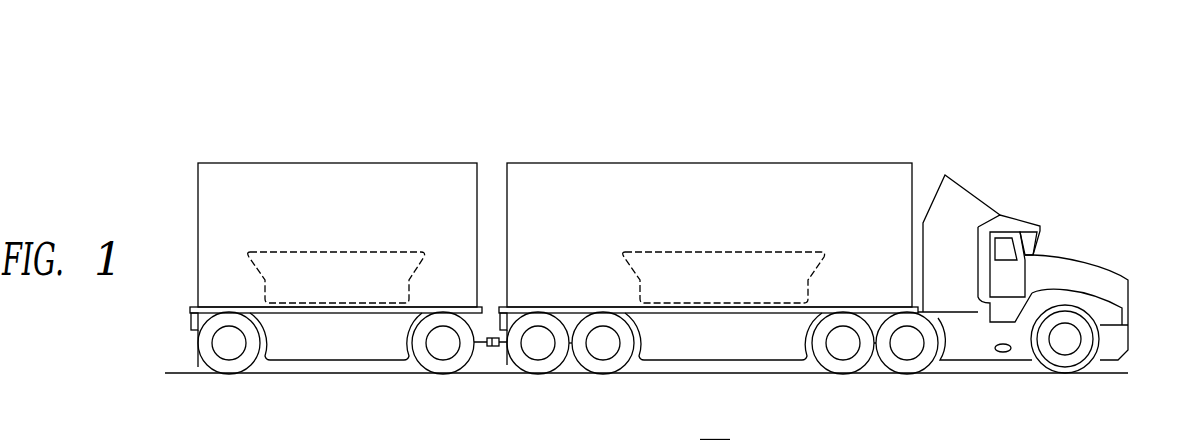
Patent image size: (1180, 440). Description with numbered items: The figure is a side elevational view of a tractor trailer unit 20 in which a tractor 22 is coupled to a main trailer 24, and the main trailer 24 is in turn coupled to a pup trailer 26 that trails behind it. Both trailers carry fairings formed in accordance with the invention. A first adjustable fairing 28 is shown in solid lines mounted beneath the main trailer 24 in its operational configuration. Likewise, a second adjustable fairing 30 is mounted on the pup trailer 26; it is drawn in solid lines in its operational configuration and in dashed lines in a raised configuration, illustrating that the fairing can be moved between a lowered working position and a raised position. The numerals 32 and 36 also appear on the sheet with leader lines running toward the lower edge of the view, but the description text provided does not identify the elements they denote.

The tractor trailer unit 20 is at (690, 80).
The tractor 22 is at (1008, 206).
The main trailer 24 is at (827, 161).
The pup trailer 26 is at (283, 161).
The first adjustable fairing 28 is at (761, 340).
The second adjustable fairing 30 is at (282, 348).
The road surface 32 is at (917, 439).
The reference line 36 is at (708, 439).